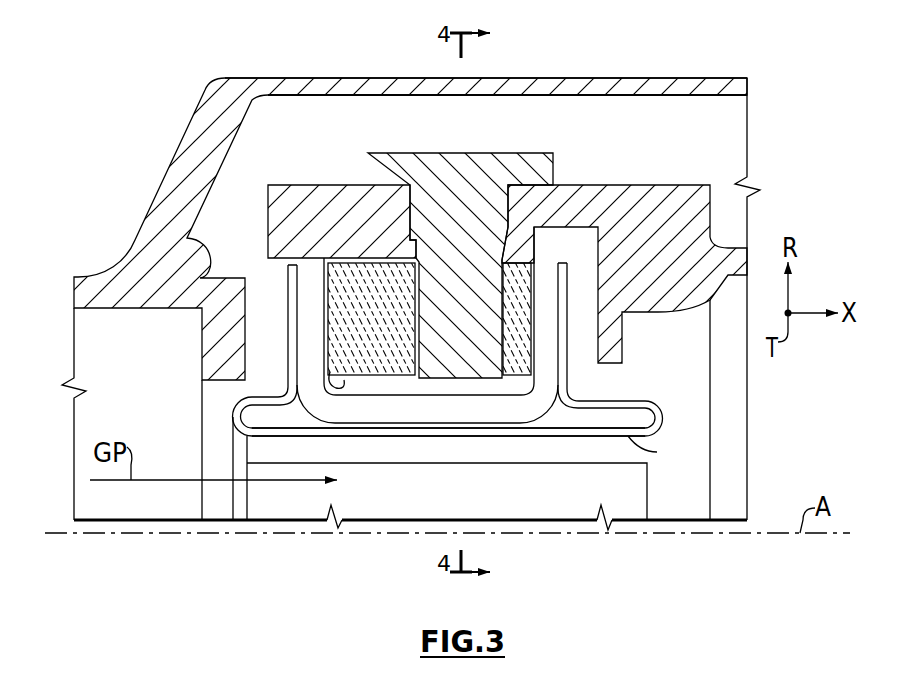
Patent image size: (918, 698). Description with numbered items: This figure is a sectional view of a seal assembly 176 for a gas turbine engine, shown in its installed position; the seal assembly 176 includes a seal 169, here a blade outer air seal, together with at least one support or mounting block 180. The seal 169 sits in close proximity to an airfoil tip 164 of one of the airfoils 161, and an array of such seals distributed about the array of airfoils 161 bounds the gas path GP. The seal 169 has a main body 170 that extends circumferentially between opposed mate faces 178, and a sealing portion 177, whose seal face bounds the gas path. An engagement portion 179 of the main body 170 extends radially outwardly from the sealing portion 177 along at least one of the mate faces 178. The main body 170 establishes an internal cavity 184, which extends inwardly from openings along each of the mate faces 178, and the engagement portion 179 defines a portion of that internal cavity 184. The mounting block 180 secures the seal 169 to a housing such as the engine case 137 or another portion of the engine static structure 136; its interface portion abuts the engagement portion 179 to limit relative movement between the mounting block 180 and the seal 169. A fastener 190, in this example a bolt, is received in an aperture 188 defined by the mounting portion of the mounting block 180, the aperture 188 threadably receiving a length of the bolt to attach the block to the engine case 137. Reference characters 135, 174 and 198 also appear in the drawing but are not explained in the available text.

The seal interface 135 is at (333, 368).
The engine static structure 136 is at (465, 58).
The engine case 137 is at (287, 78).
The airfoils 161 is at (243, 505).
The airfoil tip 164 is at (300, 450).
The seal 169 is at (235, 487).
The main body 170 is at (287, 327).
The mounting surface 174 is at (318, 97).
The seal assembly 176 is at (160, 70).
The sealing portion 177 is at (657, 418).
The mate faces 178 is at (643, 400).
The engagement portion 179 is at (567, 318).
The mounting block 180 is at (528, 298).
The internal cavity 184 is at (361, 397).
The aperture 188 is at (424, 294).
The fastener 190 is at (505, 152).
The seal edge 198 is at (342, 384).